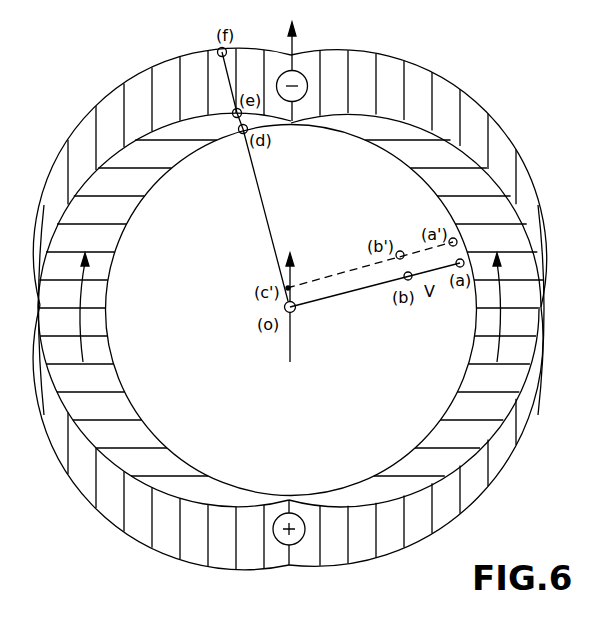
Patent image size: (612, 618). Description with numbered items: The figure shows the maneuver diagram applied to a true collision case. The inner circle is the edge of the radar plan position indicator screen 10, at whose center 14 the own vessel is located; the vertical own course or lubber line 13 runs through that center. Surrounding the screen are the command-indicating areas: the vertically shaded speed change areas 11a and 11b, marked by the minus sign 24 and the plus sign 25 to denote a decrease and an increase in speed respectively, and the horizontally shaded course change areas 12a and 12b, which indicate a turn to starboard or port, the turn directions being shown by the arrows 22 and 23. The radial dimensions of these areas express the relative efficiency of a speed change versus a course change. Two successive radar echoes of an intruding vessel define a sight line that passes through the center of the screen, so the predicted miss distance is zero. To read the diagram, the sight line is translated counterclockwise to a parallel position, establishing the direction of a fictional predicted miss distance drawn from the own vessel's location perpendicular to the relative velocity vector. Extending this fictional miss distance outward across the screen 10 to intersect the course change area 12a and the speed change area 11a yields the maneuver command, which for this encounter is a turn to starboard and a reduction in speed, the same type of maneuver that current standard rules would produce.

The radar plan position indicator screen 10 is at (340, 178).
The speed change area 11a is at (468, 107).
The speed change area 11b is at (442, 523).
The course change area 12a is at (411, 153).
The course change area 12b is at (105, 270).
The own course line (lubber line) 13 is at (293, 282).
The center of the screen 14 is at (296, 312).
The arrow 22 is at (86, 323).
The arrow 23 is at (499, 323).
The minus sign 24 is at (301, 73).
The plus sign 25 is at (283, 546).